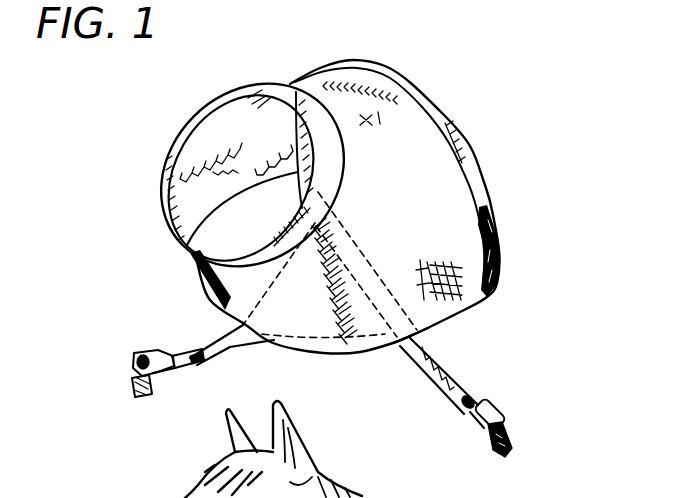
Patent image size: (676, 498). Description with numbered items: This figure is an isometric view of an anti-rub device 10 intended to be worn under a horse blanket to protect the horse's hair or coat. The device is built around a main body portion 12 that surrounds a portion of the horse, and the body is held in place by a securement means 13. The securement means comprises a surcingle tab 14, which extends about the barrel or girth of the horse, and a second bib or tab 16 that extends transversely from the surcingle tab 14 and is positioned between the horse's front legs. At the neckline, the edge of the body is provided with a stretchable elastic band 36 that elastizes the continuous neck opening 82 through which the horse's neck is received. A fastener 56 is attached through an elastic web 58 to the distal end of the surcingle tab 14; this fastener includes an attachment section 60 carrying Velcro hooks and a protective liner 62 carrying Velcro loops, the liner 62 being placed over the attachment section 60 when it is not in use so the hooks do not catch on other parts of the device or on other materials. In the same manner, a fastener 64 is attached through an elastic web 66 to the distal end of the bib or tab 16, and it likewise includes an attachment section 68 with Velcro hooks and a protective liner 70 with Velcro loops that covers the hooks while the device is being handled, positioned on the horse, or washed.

The anti-rub device 10 is at (455, 82).
The main body portion 12 is at (436, 190).
The securement means 13 is at (410, 356).
The surcingle tab 14 is at (450, 370).
The bib or tab 16 is at (230, 346).
The elastic band 36 is at (183, 142).
The fastener 56 is at (480, 423).
The elastic web 58 is at (488, 404).
The attachment section 60 is at (510, 445).
The protective liner 62 is at (508, 412).
The fastener 64 is at (170, 372).
The elastic web 66 is at (175, 355).
The attachment section 68 is at (152, 395).
The protective liner 70 is at (145, 322).
The neck opening 82 is at (258, 102).